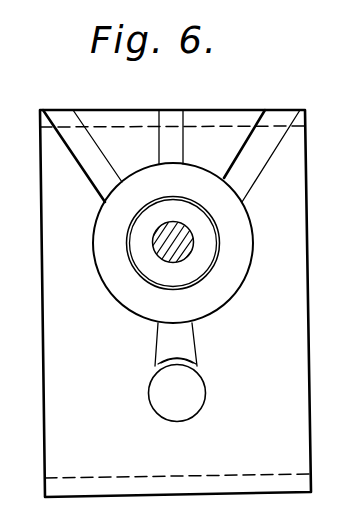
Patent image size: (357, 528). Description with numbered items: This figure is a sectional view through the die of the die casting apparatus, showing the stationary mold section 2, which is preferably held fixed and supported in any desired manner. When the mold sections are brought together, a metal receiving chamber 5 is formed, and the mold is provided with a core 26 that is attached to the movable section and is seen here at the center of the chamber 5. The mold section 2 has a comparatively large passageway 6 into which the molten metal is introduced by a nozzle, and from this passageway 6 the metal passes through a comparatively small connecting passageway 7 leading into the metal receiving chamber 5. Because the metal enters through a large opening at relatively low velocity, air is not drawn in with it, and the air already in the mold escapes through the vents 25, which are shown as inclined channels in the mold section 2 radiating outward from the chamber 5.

The mold section 2 is at (46, 191).
The vents 25 is at (60, 118).
The metal receiving chamber 5 is at (152, 268).
The core 26 is at (160, 238).
The connecting passageway 7 is at (168, 335).
The passageway 6 is at (158, 392).